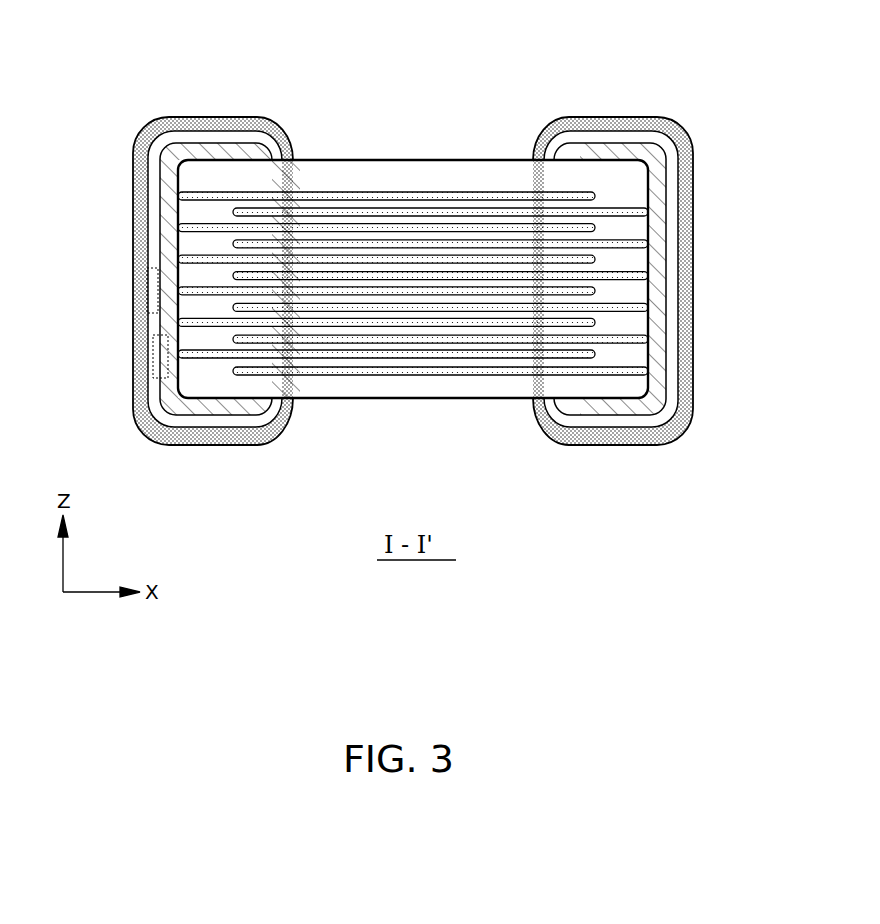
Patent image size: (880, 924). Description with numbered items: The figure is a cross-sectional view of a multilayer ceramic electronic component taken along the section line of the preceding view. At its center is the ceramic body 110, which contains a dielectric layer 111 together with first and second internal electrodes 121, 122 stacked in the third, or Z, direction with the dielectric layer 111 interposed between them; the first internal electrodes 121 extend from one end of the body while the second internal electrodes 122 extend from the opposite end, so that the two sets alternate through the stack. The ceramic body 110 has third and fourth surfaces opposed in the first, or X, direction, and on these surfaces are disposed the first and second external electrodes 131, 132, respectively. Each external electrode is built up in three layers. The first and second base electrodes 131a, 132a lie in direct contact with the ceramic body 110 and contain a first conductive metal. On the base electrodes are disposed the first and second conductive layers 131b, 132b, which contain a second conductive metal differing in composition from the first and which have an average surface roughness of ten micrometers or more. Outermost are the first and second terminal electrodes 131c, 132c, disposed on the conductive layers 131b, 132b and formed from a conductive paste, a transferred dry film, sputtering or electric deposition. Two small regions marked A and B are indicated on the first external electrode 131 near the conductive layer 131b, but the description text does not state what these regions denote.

The ceramic body 110 is at (349, 234).
The dielectric layer 111 is at (187, 210).
The first internal electrode 121 is at (300, 193).
The second internal electrode 122 is at (245, 213).
The first external electrode 131 is at (178, 226).
The first base electrode 131a is at (225, 245).
The first conductive layer 131b is at (166, 120).
The first terminal electrode 131c is at (122, 131).
The second external electrode 132 is at (651, 226).
The second base electrode 132a is at (610, 228).
The second conductive layer 132b is at (661, 118).
The second terminal electrode 132c is at (703, 130).
The region A is at (138, 294).
The region B is at (140, 361).